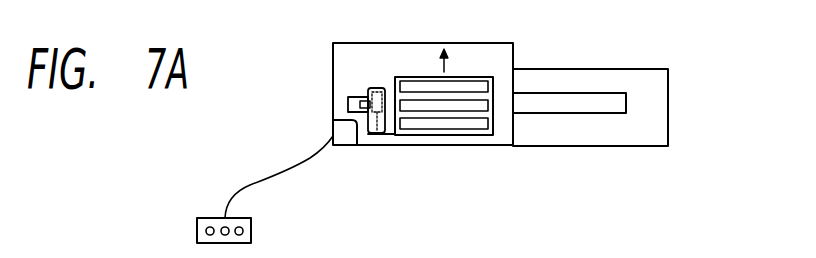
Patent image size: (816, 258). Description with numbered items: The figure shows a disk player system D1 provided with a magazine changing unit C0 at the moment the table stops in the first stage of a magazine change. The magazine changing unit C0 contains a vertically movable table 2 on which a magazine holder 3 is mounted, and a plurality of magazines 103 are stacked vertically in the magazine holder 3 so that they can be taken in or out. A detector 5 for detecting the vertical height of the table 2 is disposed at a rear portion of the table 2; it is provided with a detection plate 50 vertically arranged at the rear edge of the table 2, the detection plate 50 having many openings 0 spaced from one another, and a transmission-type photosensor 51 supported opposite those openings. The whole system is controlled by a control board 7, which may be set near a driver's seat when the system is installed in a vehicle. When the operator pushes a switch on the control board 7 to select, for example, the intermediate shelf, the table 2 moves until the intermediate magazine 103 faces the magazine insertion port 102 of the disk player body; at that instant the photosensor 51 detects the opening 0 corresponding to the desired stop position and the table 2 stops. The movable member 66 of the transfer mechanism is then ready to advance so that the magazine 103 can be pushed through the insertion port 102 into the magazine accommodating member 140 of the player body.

The magazine changing unit C0 is at (420, 43).
The detector 5 is at (345, 108).
The movable member 66 is at (349, 101).
The photosensor 51 is at (366, 101).
The detection plate 50 is at (376, 134).
The opening 0 is at (373, 132).
The table 2 is at (437, 136).
The magazine holder 3 is at (473, 77).
The magazine 103 is at (484, 83).
The magazine insertion port 102 is at (505, 105).
The disk player system D1 is at (596, 69).
The magazine accommodating member 140 is at (627, 101).
The control board 7 is at (252, 233).